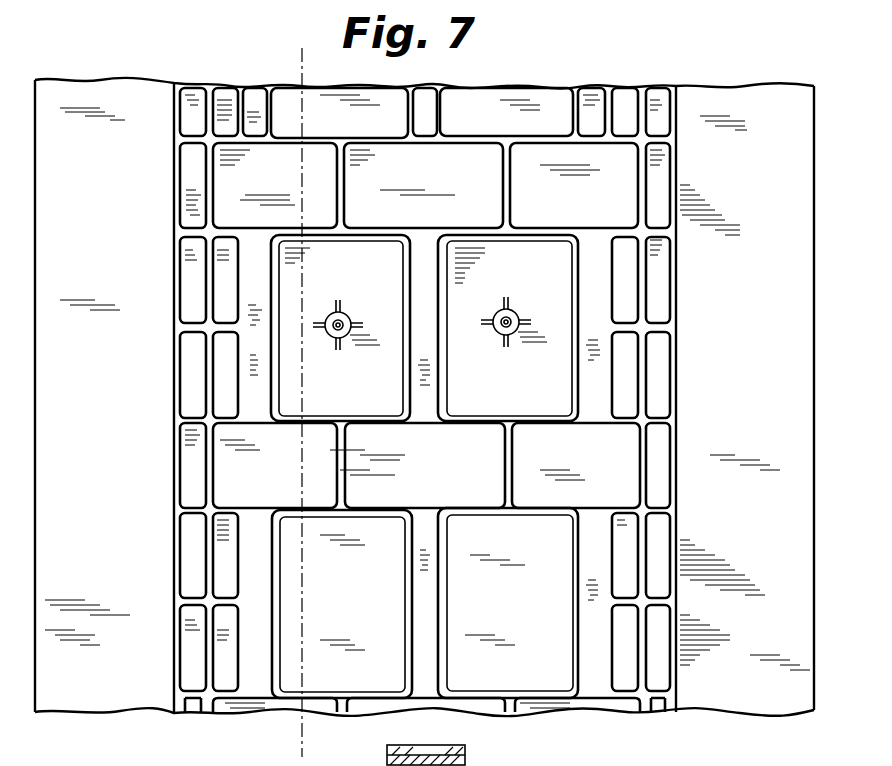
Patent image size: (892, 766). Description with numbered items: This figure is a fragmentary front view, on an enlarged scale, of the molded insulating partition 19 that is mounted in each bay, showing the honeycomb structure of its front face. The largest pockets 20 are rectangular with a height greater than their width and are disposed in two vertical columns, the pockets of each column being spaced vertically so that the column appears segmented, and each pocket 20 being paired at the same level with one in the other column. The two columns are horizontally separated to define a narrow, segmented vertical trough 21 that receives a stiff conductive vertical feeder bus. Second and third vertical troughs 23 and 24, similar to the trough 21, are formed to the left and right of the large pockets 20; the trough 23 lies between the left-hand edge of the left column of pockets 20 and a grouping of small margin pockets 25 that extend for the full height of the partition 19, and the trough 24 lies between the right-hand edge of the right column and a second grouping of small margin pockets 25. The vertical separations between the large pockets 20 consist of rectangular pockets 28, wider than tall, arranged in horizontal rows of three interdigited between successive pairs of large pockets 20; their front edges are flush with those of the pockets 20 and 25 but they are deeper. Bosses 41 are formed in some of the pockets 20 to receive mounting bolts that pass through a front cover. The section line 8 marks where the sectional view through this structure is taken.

The insulating partition 19 is at (522, 84).
The section line 8- 8 is at (360, 62).
The large pockets 20 is at (343, 124).
The vertical trough 21 is at (427, 537).
The second vertical trough 23 is at (259, 528).
The third vertical trough 24 is at (590, 405).
The small margin pockets 25 is at (200, 285).
The rectangular pockets 28 is at (277, 182).
The bosses 41 is at (349, 308).